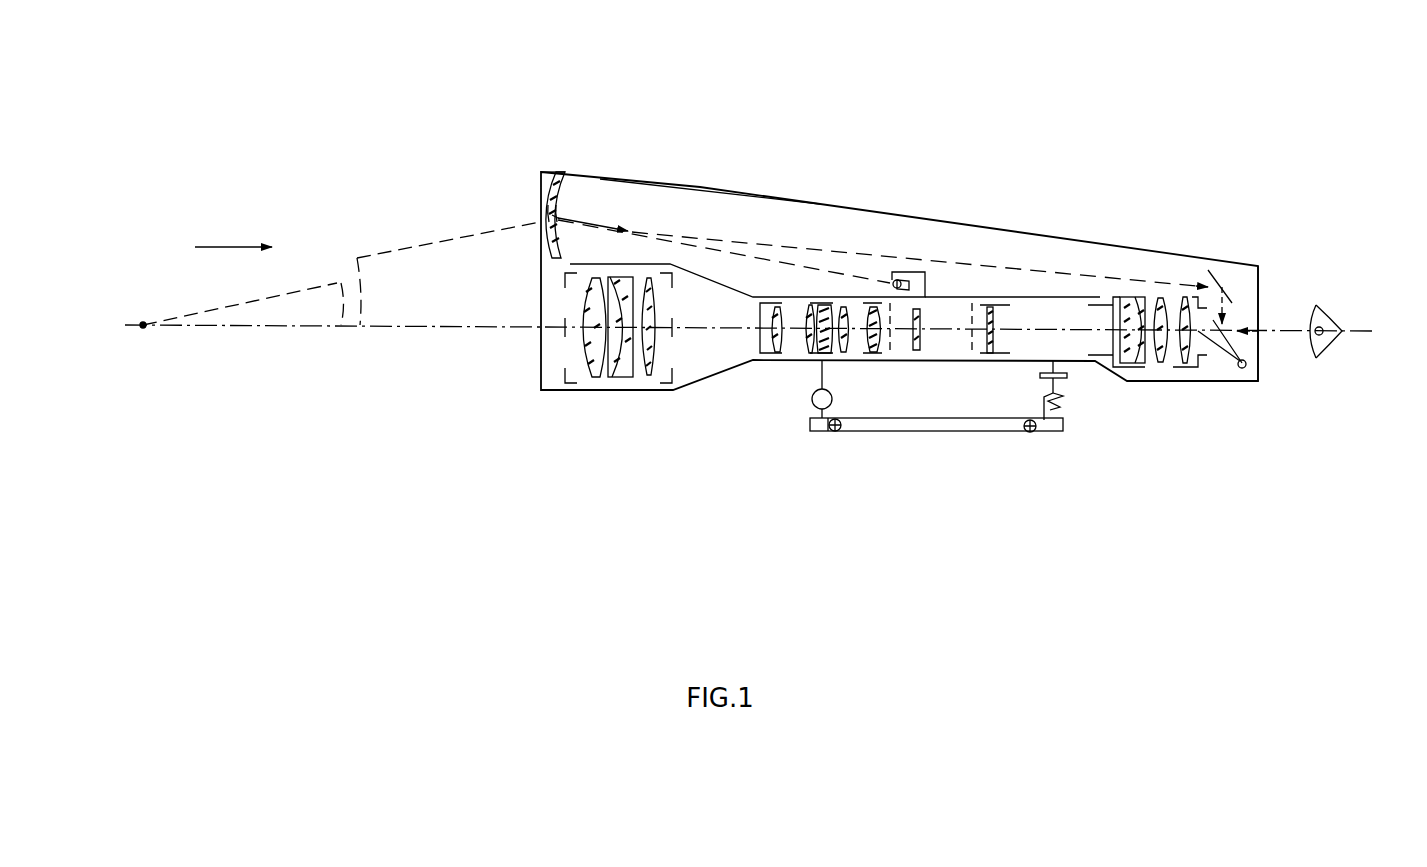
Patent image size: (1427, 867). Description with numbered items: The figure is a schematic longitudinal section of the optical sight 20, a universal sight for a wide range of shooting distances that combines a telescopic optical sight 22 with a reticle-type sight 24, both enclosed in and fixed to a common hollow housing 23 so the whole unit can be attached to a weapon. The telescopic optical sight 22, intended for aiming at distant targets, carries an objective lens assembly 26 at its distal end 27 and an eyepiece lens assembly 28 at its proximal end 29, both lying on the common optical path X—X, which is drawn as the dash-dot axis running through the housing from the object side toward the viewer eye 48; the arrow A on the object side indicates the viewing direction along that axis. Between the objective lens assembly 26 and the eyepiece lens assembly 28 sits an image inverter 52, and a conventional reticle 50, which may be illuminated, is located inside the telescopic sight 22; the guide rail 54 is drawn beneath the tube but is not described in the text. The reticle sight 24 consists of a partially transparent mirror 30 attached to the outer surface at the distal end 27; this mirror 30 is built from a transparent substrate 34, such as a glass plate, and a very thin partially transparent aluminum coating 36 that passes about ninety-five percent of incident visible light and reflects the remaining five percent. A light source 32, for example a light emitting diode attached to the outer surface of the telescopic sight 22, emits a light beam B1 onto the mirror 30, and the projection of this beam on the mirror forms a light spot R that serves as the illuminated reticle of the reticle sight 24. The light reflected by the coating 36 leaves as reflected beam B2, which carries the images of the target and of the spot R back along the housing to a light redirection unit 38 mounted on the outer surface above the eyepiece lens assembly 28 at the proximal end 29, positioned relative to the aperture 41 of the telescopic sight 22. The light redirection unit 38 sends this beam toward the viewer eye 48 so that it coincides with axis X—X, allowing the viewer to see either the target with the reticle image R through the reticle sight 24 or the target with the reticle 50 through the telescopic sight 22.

The optical sight 20 is at (846, 182).
The telescopic optical sight 22 is at (718, 385).
The common hollow housing 23 is at (715, 189).
The reticle-type sight 24 is at (683, 212).
The objective lens assembly 26 is at (592, 380).
The distal end 27 is at (548, 172).
The eyepiece lens assembly 28 is at (1148, 369).
The proximal end 29 is at (1258, 266).
The partially transparent mirror 30 is at (555, 213).
The light source 32 is at (898, 282).
The transparent substrate 34 is at (543, 202).
The partially transparent coating 36 is at (557, 215).
The light redirection unit 38 is at (1212, 240).
The aperture 41 is at (1246, 367).
The viewer eye 48 is at (1330, 303).
The reticle 50 is at (990, 357).
The image inverter 52 is at (800, 370).
The guide rail 54 is at (965, 428).
The light beam B1 is at (750, 257).
The reflected beam B2 is at (782, 243).
The light spot R is at (558, 217).
The viewing direction A is at (210, 234).
The optical path X is at (742, 309).